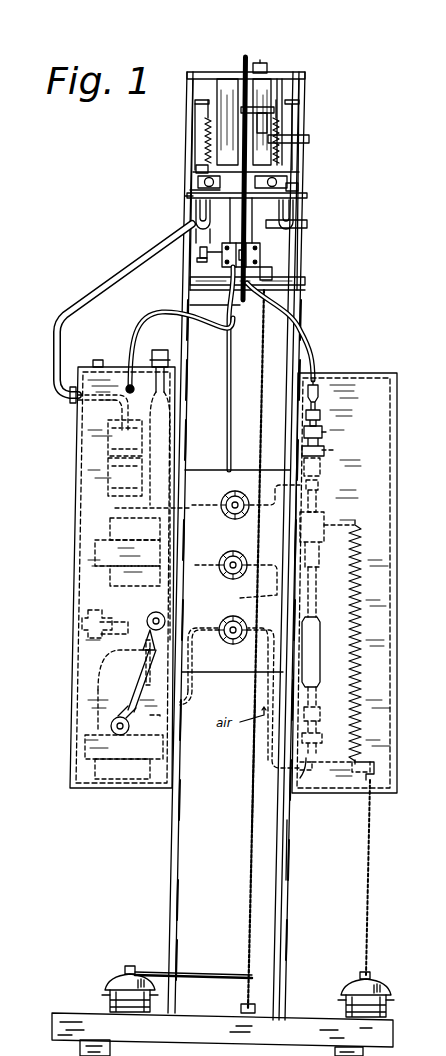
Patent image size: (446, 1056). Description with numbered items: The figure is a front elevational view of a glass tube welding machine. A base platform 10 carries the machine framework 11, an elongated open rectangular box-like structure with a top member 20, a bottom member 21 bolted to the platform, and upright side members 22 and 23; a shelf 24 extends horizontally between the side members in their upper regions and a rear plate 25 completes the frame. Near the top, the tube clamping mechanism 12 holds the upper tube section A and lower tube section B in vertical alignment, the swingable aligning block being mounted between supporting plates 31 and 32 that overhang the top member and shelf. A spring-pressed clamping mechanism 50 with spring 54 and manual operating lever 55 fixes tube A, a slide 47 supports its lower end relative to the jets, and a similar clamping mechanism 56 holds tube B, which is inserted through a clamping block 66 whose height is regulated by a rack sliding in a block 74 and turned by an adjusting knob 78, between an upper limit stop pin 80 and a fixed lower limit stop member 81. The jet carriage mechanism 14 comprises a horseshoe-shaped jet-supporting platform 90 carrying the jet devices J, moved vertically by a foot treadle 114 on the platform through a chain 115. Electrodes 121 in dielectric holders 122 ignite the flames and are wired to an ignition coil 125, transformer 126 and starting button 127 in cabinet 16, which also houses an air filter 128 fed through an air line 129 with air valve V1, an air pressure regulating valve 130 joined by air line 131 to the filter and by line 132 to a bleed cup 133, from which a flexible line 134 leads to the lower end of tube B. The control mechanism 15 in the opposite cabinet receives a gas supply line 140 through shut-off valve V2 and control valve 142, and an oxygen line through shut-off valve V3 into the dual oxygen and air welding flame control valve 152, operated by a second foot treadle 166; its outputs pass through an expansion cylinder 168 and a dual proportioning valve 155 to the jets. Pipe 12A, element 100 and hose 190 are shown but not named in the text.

The base platform 10 is at (300, 1022).
The machine framework 11 is at (292, 856).
The tube clamping mechanism 12 is at (276, 74).
The supply pipe 12A is at (108, 288).
The jet carriage mechanism 14 is at (187, 198).
The control mechanism 15 is at (386, 376).
The cabinet 16 is at (74, 452).
The top member 20 is at (210, 75).
The bottom member 21 is at (249, 1013).
The upright side member 22 is at (283, 892).
The upright side member 23 is at (173, 862).
The shelf 24 is at (296, 292).
The rear plate 25 is at (218, 470).
The supporting plate 31 is at (262, 64).
The supporting plate 32 is at (215, 283).
The slide 47 is at (193, 190).
The clamping mechanism 50 is at (268, 110).
The spring 54 is at (268, 128).
The manual operating lever 55 is at (310, 139).
The clamping mechanism 56 is at (262, 249).
The clamping block 66 is at (262, 262).
The block 74 is at (229, 302).
The adjusting knob 78 is at (274, 276).
The upper limit stop pin 80 is at (200, 256).
The lower limit stop member 81 is at (205, 268).
The jet-supporting platform 90 is at (300, 200).
The torch holder 100 is at (196, 212).
The foot treadle 114 is at (118, 982).
The chain 115 is at (253, 790).
The electrode 121 is at (296, 186).
The dielectric holder 122 is at (196, 170).
The ignition coil 125 is at (112, 485).
The transformer 126 is at (96, 553).
The starting button 127 is at (98, 360).
The air filter 128 is at (98, 680).
The air line 129 is at (196, 690).
The air pressure regulating valve 130 is at (100, 640).
The air line 131 is at (140, 668).
The line 132 is at (122, 398).
The bleed cup 133 is at (160, 350).
The flexible line 134 is at (143, 323).
The gas supply line 140 is at (150, 508).
The control valve 142 is at (320, 455).
The dual oxygen and air welding flame control valve 152 is at (320, 795).
The dual proportioning valve 155 is at (322, 432).
The foot treadle 166 is at (380, 986).
The expansion cylinder 168 is at (320, 665).
The hose 190 is at (310, 346).
The upper tube section A is at (246, 58).
The lower tube section B is at (198, 226).
The jet devices J is at (300, 165).
The air valve V1 is at (220, 622).
The shut-off valve V2 is at (222, 498).
The shut-off valve V3 is at (221, 557).